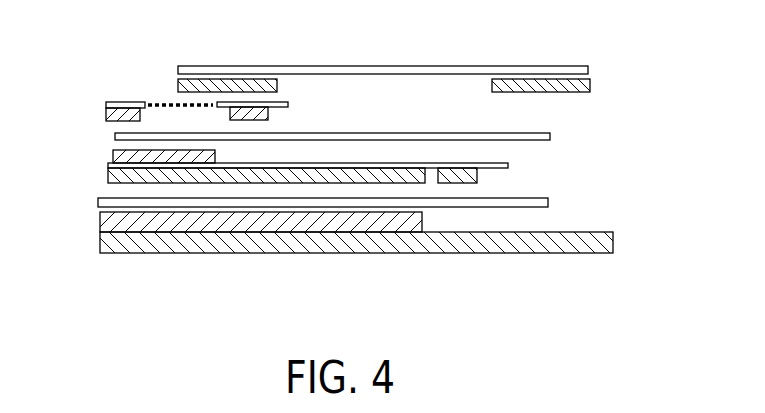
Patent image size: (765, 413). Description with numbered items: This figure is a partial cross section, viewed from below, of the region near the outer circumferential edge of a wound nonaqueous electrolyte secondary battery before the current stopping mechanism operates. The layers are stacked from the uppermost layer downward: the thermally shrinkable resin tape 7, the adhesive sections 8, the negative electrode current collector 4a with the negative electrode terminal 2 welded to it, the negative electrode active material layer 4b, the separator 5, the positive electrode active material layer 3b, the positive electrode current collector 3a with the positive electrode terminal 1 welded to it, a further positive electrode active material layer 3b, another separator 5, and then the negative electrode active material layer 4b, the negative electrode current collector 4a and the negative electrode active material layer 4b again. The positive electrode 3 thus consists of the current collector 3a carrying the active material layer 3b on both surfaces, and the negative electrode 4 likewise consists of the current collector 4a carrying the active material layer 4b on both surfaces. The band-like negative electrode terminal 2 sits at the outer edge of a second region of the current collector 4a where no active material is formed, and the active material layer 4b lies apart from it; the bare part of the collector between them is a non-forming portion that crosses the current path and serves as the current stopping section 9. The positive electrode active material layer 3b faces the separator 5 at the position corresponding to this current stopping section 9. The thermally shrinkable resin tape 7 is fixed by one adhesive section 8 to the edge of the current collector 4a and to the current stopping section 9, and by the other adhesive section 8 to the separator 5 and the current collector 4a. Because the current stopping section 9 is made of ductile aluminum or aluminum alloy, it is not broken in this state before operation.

The positive electrode terminal 1 is at (477, 173).
The negative electrode terminal 2 is at (268, 113).
The positive electrode 3 is at (283, 157).
The positive electrode current collector 3a is at (108, 168).
The positive electrode active material layer 3b is at (390, 163).
The negative electrode 4 is at (331, 165).
The negative electrode current collector 4a is at (106, 104).
The negative electrode active material layer 4b is at (106, 116).
The separator 5 is at (550, 136).
The thermally shrinkable resin tape 7 is at (435, 66).
The adhesive section 8 is at (257, 79).
The current stopping section 9 is at (160, 102).